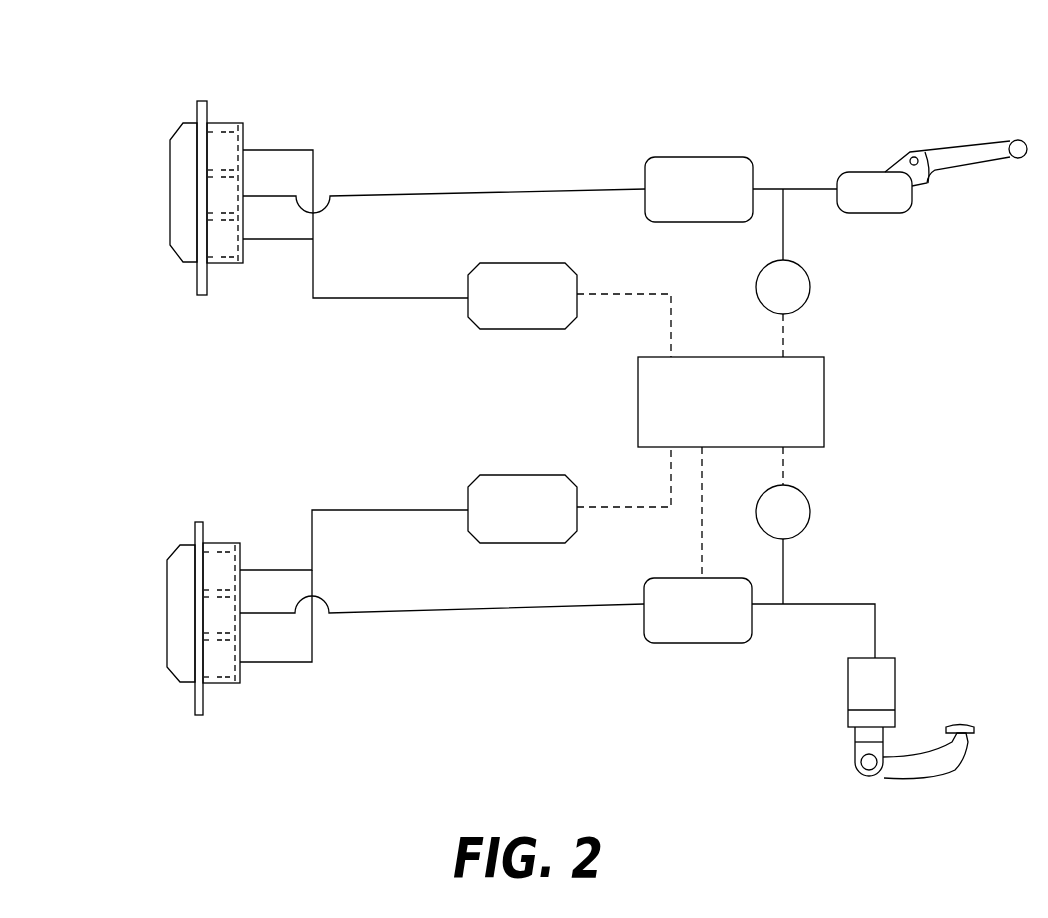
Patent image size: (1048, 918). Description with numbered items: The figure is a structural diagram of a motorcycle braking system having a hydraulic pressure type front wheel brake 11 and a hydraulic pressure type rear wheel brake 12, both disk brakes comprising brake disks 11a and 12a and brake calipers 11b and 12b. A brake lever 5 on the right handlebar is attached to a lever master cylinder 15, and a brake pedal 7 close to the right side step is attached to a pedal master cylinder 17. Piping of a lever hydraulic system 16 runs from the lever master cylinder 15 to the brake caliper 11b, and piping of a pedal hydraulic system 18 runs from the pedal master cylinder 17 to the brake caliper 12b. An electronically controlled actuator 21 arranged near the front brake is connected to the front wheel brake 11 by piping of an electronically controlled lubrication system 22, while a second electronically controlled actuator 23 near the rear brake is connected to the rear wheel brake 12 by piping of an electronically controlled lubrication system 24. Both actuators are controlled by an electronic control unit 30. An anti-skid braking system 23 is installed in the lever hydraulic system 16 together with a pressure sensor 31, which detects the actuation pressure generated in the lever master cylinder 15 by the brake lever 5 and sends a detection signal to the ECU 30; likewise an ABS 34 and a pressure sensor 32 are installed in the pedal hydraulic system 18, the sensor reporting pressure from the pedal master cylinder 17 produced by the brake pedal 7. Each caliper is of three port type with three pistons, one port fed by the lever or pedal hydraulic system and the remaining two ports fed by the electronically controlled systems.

The brake lever 5 is at (978, 142).
The brake pedal 7 is at (953, 772).
The front wheel brake 11 is at (179, 112).
The brake disk 11a is at (197, 288).
The brake caliper 11b is at (230, 122).
The rear wheel brake 12 is at (171, 530).
The brake disk 12a is at (193, 703).
The brake caliper 12b is at (225, 541).
The lever master cylinder 15 is at (865, 172).
The lever hydraulic system 16 is at (558, 190).
The pedal master cylinder 17 is at (895, 683).
The pedal hydraulic system 18 is at (528, 613).
The electronically controlled actuator 21 is at (530, 330).
The electronically controlled lubrication system 22 is at (375, 300).
The electronically controlled actuator / anti-skid braking system (ABS) 23 is at (697, 157).
The electronically controlled lubrication system 24 is at (386, 508).
The electronic control unit (ECU) 30 is at (824, 408).
The pressure sensor 31 is at (810, 285).
The pressure sensor 32 is at (810, 510).
The ABS 34 is at (700, 645).